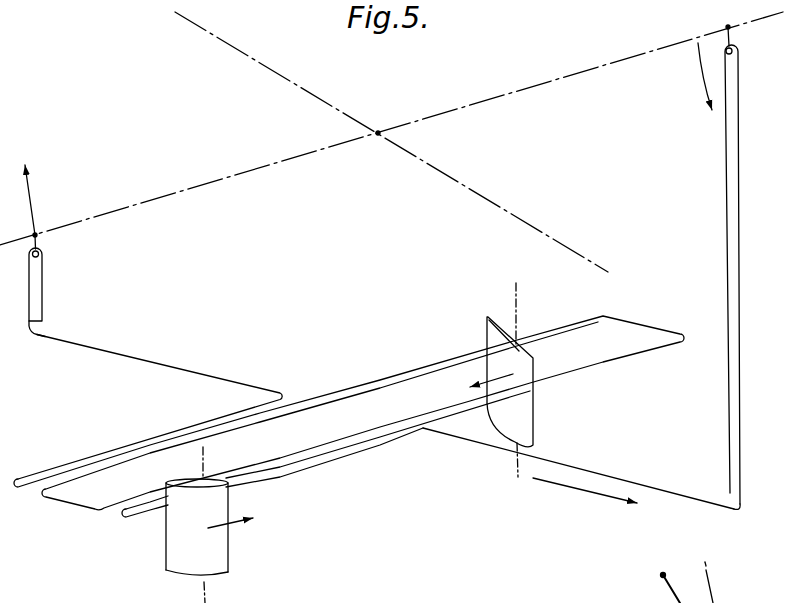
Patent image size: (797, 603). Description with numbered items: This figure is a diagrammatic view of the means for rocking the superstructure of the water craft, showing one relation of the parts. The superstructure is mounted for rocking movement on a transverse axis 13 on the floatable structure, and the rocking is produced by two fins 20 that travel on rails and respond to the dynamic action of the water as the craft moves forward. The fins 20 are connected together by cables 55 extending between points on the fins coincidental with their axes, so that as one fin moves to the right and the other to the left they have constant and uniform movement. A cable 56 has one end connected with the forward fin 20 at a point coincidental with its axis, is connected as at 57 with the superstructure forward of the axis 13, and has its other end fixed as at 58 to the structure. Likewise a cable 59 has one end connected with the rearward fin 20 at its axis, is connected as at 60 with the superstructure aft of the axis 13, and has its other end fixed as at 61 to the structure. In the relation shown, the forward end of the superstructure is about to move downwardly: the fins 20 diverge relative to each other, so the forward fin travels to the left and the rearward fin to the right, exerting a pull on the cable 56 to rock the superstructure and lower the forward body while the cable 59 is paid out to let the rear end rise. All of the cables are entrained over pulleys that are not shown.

The transverse axis 13 is at (378, 130).
The fin 20 is at (534, 424).
The cables 55 is at (342, 438).
The cable 56 is at (477, 445).
The connection with the superstructure 57 is at (735, 48).
The fixed end 58 is at (729, 491).
The cable 59 is at (178, 368).
The connection with the superstructure 60 is at (41, 250).
The fixed end 61 is at (44, 322).